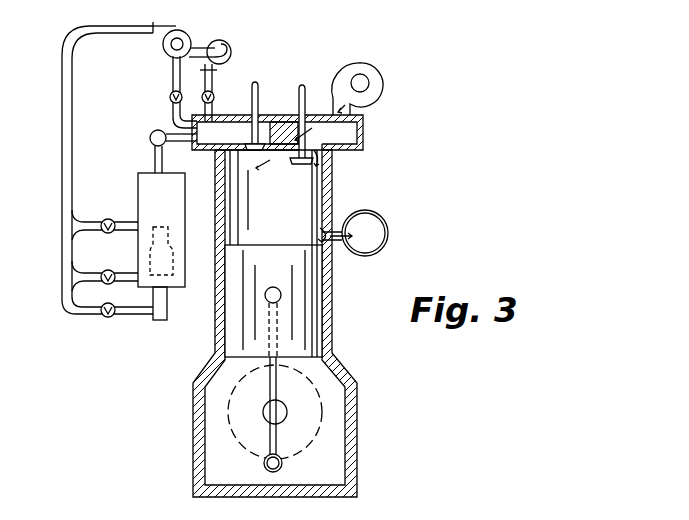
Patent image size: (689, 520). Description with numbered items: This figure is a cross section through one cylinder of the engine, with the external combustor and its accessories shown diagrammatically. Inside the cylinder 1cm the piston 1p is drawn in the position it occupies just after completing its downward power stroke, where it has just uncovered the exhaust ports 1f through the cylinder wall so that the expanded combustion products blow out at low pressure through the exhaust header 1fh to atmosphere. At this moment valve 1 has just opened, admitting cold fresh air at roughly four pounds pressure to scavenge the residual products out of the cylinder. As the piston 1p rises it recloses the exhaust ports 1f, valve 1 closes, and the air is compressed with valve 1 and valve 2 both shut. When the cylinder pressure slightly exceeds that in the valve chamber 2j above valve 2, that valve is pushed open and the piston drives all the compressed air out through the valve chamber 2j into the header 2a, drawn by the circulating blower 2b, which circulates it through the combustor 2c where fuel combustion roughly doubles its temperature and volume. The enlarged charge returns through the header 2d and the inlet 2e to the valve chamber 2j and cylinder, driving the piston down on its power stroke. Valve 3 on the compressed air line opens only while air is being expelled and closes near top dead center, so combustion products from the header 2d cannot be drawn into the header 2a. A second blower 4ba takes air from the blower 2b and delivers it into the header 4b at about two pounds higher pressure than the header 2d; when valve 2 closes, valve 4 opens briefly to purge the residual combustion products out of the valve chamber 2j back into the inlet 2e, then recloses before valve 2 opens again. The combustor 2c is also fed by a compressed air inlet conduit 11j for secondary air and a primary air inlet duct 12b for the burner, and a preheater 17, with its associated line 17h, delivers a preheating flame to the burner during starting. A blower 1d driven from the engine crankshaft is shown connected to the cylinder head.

The valve 1 is at (306, 163).
The cylinder 1cm is at (333, 174).
The blower 1d is at (361, 68).
The exhaust ports 1f is at (337, 230).
The exhaust header 1fh is at (388, 232).
The piston 1p is at (305, 322).
The valve 2 is at (254, 152).
The header 2a is at (168, 45).
The circulating blower 2b is at (183, 38).
The combustor 2c is at (177, 230).
The header 2d is at (154, 132).
The inlet 2e is at (177, 144).
The valve chamber 2j is at (222, 133).
The valve 3 is at (170, 98).
The valve 4 is at (214, 96).
The header 4b is at (212, 80).
The blower 4ba is at (229, 49).
The compressed air inlet conduit 11j is at (122, 221).
The primary air inlet duct 12b is at (128, 274).
The preheater 17 is at (167, 304).
The pipe 17h is at (128, 316).